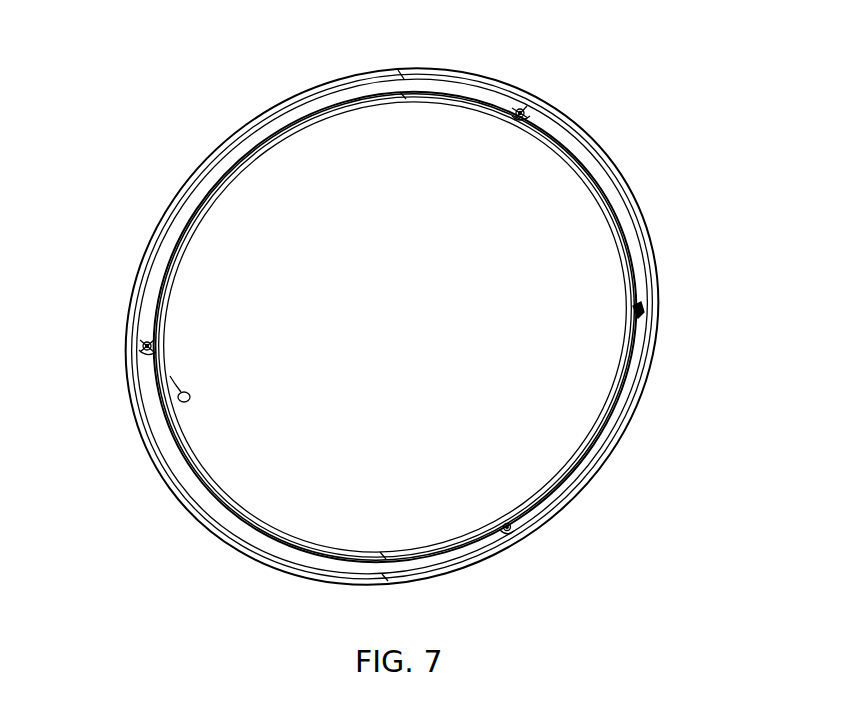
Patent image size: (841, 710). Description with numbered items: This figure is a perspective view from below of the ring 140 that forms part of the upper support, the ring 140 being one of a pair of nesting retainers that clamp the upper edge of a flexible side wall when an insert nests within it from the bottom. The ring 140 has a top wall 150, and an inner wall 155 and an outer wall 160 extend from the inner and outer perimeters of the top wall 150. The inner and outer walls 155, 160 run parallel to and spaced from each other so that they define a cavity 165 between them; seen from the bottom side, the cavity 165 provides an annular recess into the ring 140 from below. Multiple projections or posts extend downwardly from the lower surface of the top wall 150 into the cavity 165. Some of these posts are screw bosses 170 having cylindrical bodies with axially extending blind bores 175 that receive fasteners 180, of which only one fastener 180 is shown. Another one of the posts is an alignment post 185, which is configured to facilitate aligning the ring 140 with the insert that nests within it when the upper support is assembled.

The first ring 140 is at (152, 118).
The top wall 150 is at (596, 176).
The inner wall 155 is at (501, 132).
The outer wall 160 is at (379, 76).
The cavity 165 is at (272, 104).
The screw bosses 170 is at (517, 106).
The blind bores 175 is at (529, 117).
The fastener 180 is at (186, 392).
The alignment post 185 is at (642, 303).